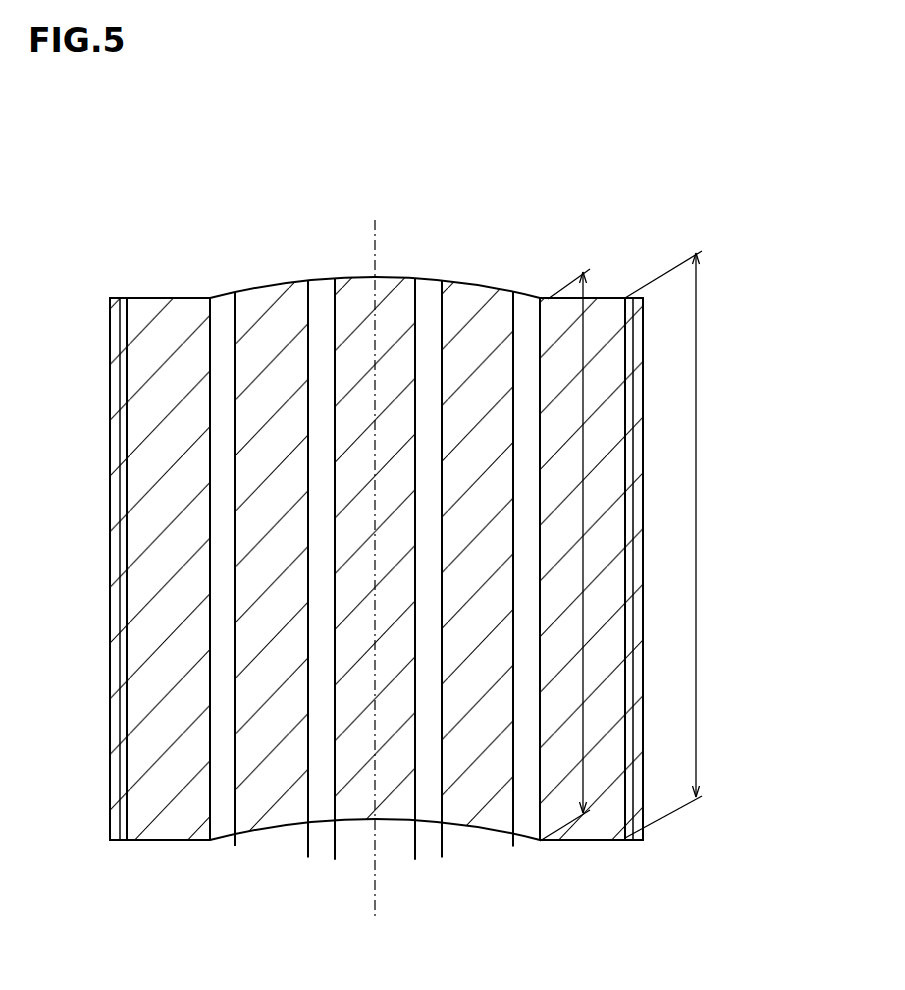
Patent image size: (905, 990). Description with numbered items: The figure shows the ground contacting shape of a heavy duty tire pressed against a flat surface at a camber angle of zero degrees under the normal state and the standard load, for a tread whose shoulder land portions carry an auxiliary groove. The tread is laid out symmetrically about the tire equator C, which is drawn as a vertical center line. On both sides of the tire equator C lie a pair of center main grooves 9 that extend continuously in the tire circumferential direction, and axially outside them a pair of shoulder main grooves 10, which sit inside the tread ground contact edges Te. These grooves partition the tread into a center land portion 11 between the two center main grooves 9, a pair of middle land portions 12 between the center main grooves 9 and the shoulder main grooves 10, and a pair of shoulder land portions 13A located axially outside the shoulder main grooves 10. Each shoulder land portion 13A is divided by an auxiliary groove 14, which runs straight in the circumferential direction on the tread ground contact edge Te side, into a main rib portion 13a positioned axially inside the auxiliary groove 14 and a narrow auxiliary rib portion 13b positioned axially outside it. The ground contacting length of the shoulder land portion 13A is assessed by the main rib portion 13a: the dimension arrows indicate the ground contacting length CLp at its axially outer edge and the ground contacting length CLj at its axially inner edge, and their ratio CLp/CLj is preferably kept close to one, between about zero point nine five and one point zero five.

The center main groove 9 is at (322, 327).
The shoulder main groove 10 is at (223, 337).
The center land portion 11 is at (358, 817).
The middle land portion 12 is at (282, 810).
The main rib portion 13a is at (605, 342).
The shoulder land portion 13A is at (600, 767).
The auxiliary rib portion 13b is at (112, 723).
The auxiliary groove 14 is at (127, 667).
The tread ground contact edge Te is at (107, 512).
The tire equator C is at (375, 551).
The ground contacting length of the inner edge of the main rib portion CLj is at (583, 547).
The ground contacting length of the outer edge of the main rib portion CLp is at (697, 537).